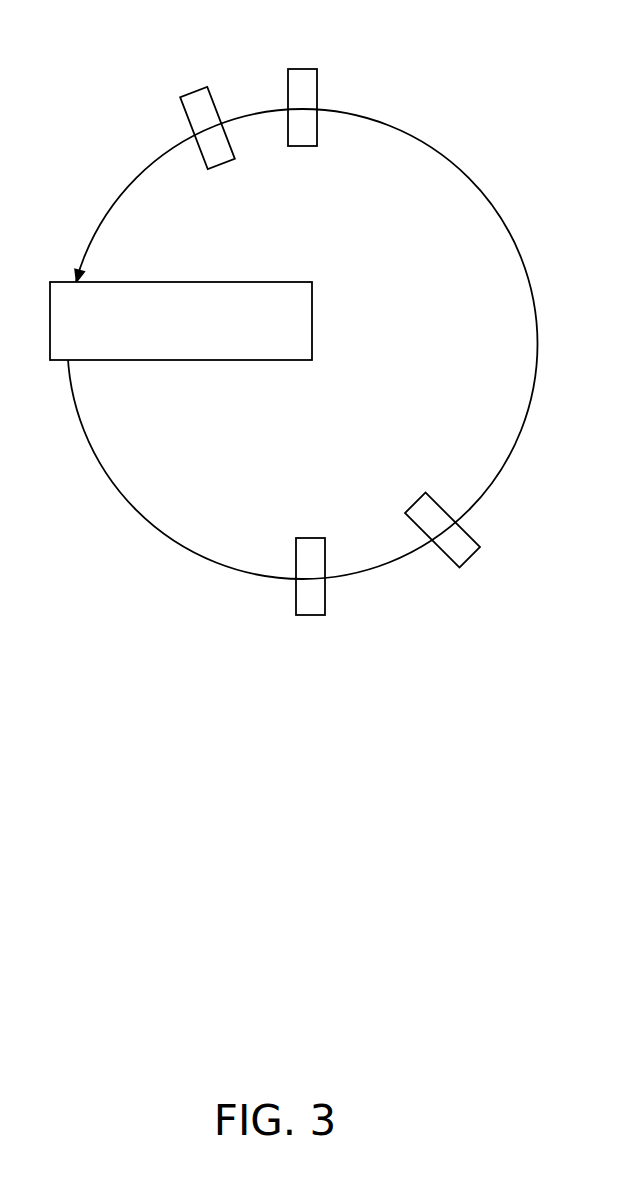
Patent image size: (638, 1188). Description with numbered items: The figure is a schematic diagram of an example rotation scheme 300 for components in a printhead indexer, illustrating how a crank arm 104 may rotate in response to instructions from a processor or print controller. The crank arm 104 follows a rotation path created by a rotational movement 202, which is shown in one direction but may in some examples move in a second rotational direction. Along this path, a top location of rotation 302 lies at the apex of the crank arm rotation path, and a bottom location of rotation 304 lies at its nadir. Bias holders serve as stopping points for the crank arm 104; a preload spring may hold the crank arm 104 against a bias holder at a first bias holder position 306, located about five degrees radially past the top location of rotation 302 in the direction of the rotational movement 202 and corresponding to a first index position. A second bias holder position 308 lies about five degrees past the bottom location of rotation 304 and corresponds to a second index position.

The crank arm 104 is at (181, 321).
The rotational movement 202 is at (138, 512).
The rotation scheme 300 is at (246, 1091).
The top location of rotation 302 is at (303, 68).
The bottom location of rotation 304 is at (310, 617).
The first bias holder position 306 is at (195, 90).
The second bias holder position 308 is at (470, 558).